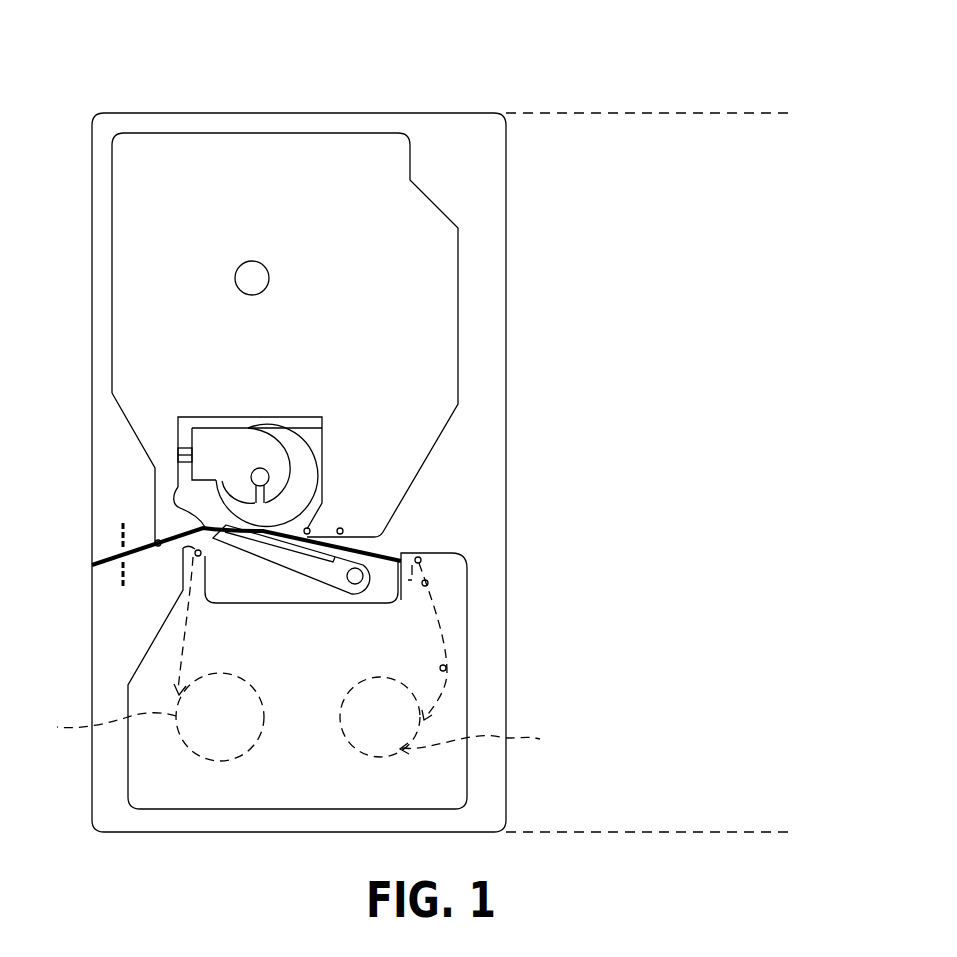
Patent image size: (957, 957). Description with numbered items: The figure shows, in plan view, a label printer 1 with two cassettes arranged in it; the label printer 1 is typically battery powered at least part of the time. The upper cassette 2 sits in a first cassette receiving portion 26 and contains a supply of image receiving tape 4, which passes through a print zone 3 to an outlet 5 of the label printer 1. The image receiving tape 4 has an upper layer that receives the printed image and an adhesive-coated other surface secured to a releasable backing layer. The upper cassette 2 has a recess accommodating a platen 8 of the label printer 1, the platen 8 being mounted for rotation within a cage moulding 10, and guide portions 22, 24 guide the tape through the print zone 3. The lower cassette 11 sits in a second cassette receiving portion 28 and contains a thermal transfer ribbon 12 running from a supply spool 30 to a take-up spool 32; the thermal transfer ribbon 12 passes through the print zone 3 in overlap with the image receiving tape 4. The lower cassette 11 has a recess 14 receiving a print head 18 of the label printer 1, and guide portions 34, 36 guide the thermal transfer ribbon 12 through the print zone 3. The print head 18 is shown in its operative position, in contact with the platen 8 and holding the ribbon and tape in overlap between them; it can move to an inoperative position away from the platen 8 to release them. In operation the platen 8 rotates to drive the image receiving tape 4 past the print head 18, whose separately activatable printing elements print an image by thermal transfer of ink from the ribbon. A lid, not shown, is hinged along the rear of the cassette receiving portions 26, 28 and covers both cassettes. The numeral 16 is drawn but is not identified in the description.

The label printer 1 is at (746, 106).
The upper cassette 2 is at (451, 256).
The print zone 3 is at (203, 508).
The image receiving tape 4 is at (100, 563).
The outlet 5 is at (106, 571).
The platen 8 is at (283, 417).
The cage moulding 10 is at (292, 477).
The lower cassette 11 is at (458, 707).
The thermal transfer ribbon 12 is at (392, 550).
The recess 14 is at (433, 598).
The cam housing 16 is at (323, 429).
The print head 18 is at (300, 573).
The guide portion 22 is at (312, 529).
The guide portion 24 is at (180, 536).
The first cassette receiving portion 26 is at (497, 176).
The second cassette receiving portion 28 is at (493, 638).
The supply spool 30 is at (450, 661).
The take-up spool 32 is at (144, 659).
The guide portion 34 is at (403, 553).
The guide portion 36 is at (192, 555).